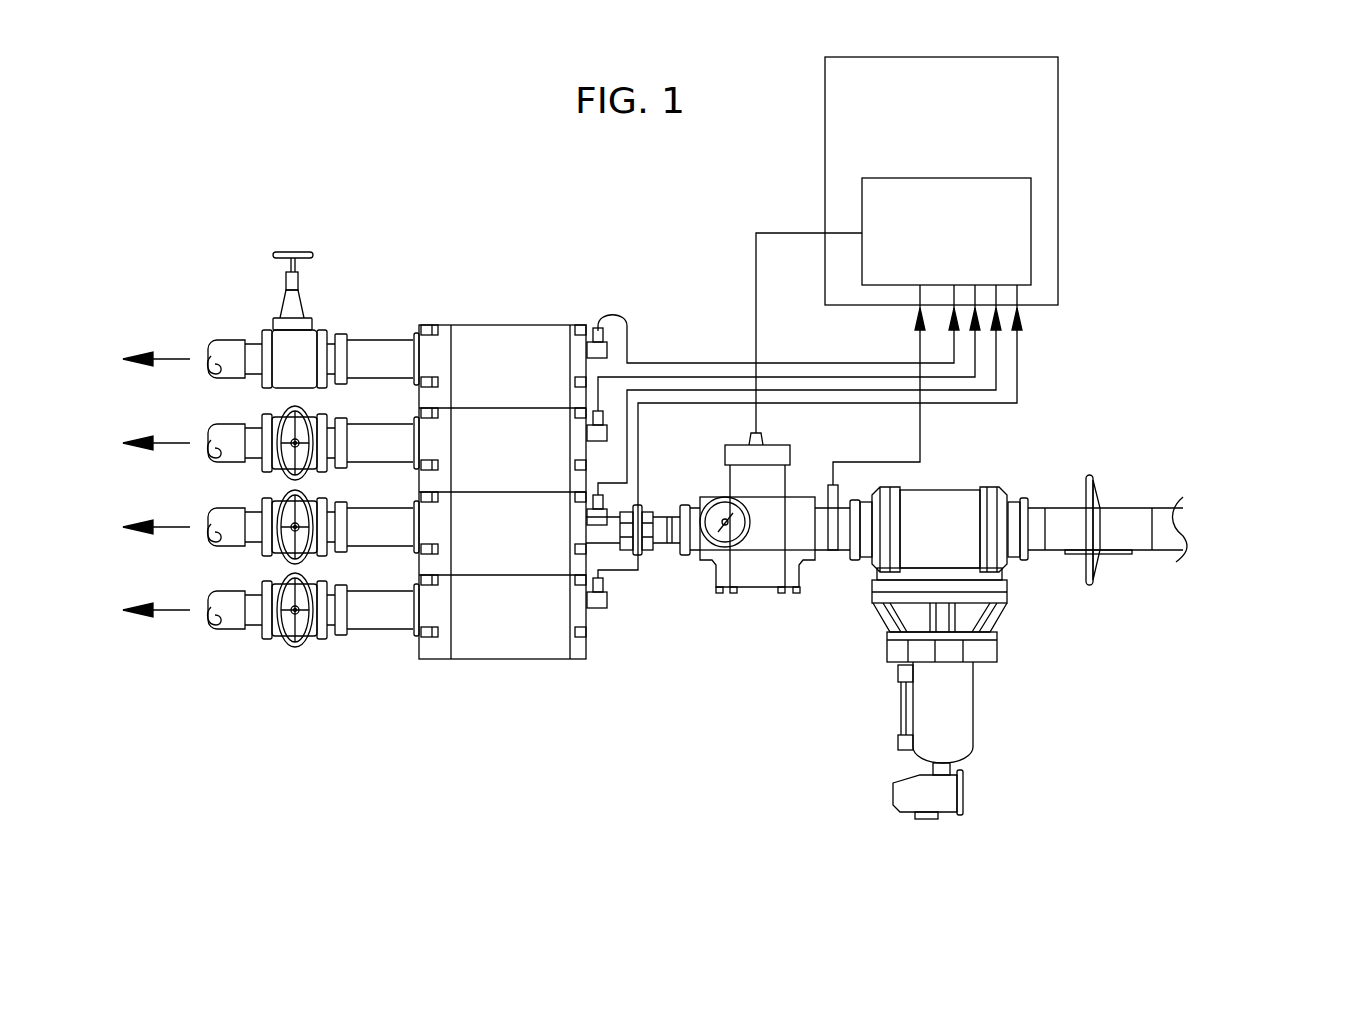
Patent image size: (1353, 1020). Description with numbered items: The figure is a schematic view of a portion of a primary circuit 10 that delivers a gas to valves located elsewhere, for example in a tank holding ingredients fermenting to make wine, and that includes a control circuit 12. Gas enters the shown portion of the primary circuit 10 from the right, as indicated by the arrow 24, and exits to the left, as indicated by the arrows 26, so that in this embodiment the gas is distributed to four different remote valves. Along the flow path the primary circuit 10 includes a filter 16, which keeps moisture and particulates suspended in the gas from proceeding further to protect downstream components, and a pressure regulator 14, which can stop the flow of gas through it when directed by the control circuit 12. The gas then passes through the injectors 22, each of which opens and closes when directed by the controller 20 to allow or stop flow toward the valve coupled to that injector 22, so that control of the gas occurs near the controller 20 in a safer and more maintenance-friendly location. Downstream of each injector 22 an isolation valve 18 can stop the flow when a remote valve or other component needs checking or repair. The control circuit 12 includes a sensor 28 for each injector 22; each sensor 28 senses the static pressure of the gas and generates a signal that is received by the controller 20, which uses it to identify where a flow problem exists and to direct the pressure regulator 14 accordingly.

The primary circuit 10 is at (478, 188).
The control circuit 12 is at (1000, 267).
The pressure regulator 14 is at (753, 588).
The filter 16 is at (950, 708).
The isolation valve 18 is at (305, 369).
The controller 20 is at (1005, 148).
The injector 22 is at (481, 355).
The arrow 24 is at (1280, 524).
The arrows 26 is at (168, 362).
The sensor 28 is at (593, 340).